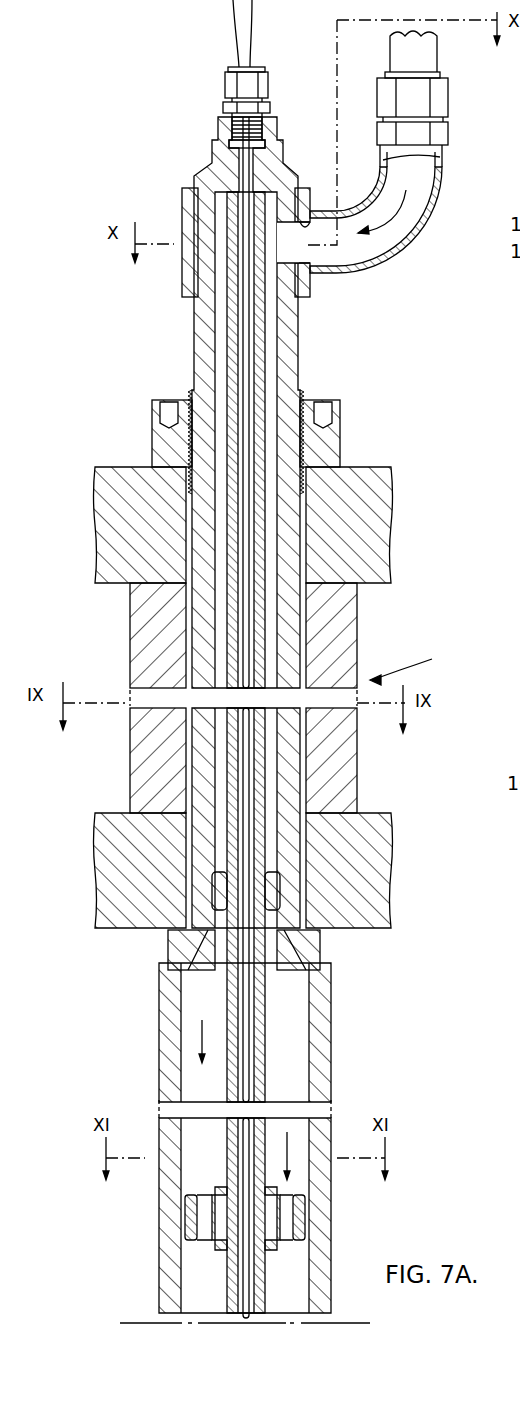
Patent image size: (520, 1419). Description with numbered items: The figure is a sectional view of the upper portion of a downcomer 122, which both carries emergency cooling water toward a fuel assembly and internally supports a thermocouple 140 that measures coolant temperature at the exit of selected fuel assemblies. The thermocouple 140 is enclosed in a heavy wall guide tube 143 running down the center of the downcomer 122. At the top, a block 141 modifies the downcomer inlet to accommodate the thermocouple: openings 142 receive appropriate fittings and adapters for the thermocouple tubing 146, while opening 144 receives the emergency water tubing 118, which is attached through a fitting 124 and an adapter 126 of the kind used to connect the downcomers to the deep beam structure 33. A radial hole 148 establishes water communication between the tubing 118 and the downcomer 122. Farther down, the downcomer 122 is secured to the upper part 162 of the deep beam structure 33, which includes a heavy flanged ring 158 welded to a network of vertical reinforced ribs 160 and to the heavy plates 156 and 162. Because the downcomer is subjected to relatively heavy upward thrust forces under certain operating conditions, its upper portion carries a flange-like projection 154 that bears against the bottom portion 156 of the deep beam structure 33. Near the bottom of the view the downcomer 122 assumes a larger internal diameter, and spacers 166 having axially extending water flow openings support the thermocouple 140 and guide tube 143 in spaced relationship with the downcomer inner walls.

The thermocouple tubing 146 is at (237, 31).
The emergency water tubing 118 is at (424, 55).
The fitting 124 is at (440, 95).
The adapter 126 is at (444, 132).
The block 141 is at (183, 200).
The openings 142 is at (186, 228).
The opening 144 is at (318, 213).
The radial hole 148 is at (287, 238).
The downcomer 122 is at (200, 342).
The thermocouple 140 is at (246, 338).
The guide tube 143 is at (259, 370).
The upper part 162 is at (386, 498).
The flanged ring 158 is at (358, 648).
The deep beam structure 33 is at (413, 666).
The bottom portion 156 is at (378, 887).
The flange-like projection 154 is at (320, 933).
The spacers 166 is at (299, 1217).
The vertical reinforced ribs 160 is at (508, 626).